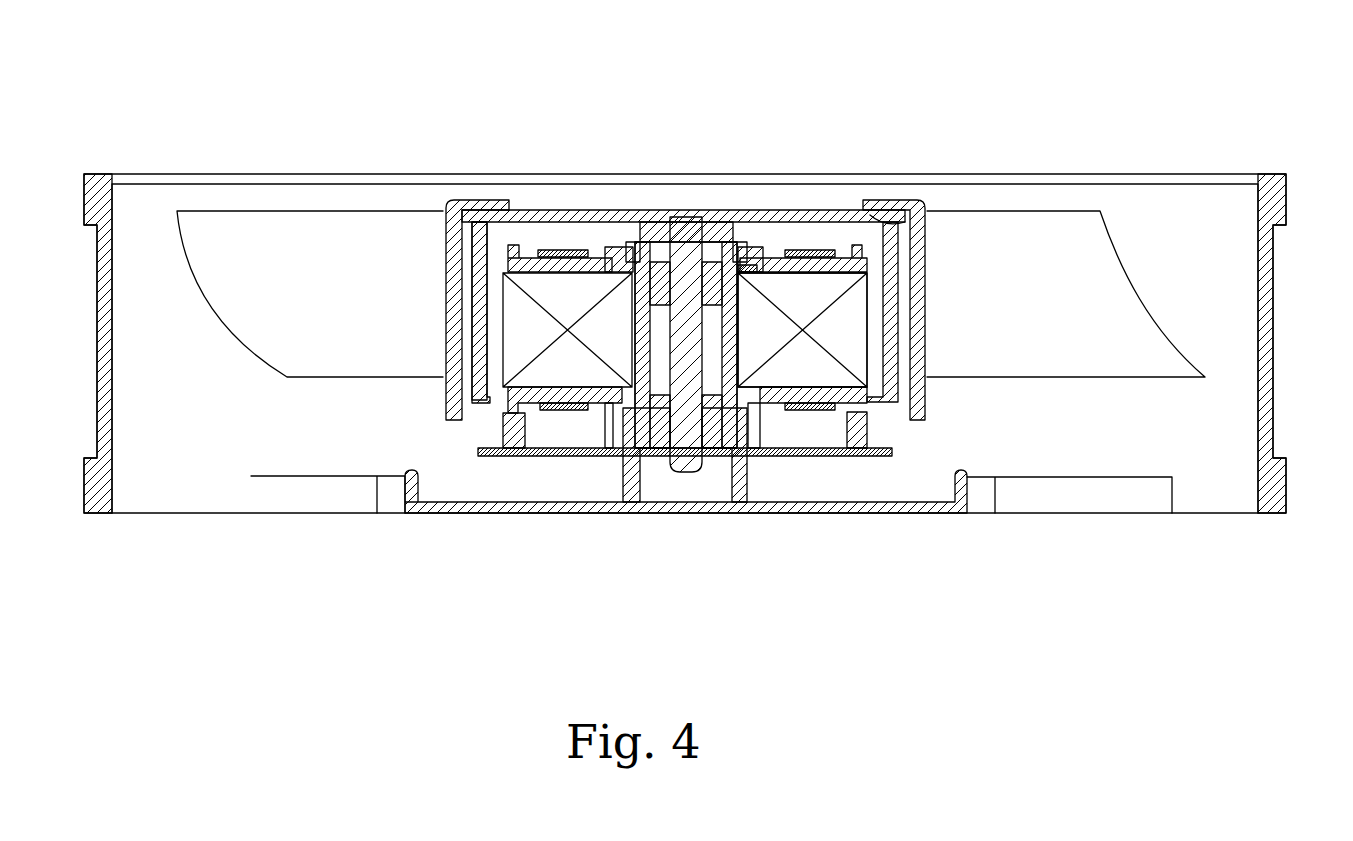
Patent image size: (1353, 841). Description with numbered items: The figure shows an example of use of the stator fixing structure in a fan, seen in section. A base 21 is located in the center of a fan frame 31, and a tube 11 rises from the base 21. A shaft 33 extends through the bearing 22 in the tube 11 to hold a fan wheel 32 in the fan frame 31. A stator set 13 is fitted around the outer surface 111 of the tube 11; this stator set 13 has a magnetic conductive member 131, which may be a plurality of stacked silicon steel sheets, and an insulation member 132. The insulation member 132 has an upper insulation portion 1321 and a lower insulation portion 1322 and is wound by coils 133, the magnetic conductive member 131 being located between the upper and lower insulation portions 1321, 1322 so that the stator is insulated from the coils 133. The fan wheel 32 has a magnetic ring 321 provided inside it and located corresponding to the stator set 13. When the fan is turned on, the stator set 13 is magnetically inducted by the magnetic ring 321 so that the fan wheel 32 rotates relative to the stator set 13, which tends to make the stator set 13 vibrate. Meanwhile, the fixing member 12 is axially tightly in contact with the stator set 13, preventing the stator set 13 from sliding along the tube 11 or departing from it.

The tube 11 is at (630, 255).
The outer surface 111 is at (618, 245).
The fixing member 12 is at (758, 262).
The stator set 13 is at (802, 280).
The magnetic conductive member 131 is at (513, 298).
The insulation member 132 is at (140, 44).
The upper insulation portion 1321 is at (475, 268).
The lower insulation portion 1322 is at (508, 393).
The coils 133 is at (552, 258).
The base 21 is at (893, 505).
The bearing 22 is at (713, 225).
The fan frame 31 is at (1278, 302).
The fan wheel 32 is at (893, 200).
The magnetic ring 321 is at (850, 212).
The shaft 33 is at (688, 228).